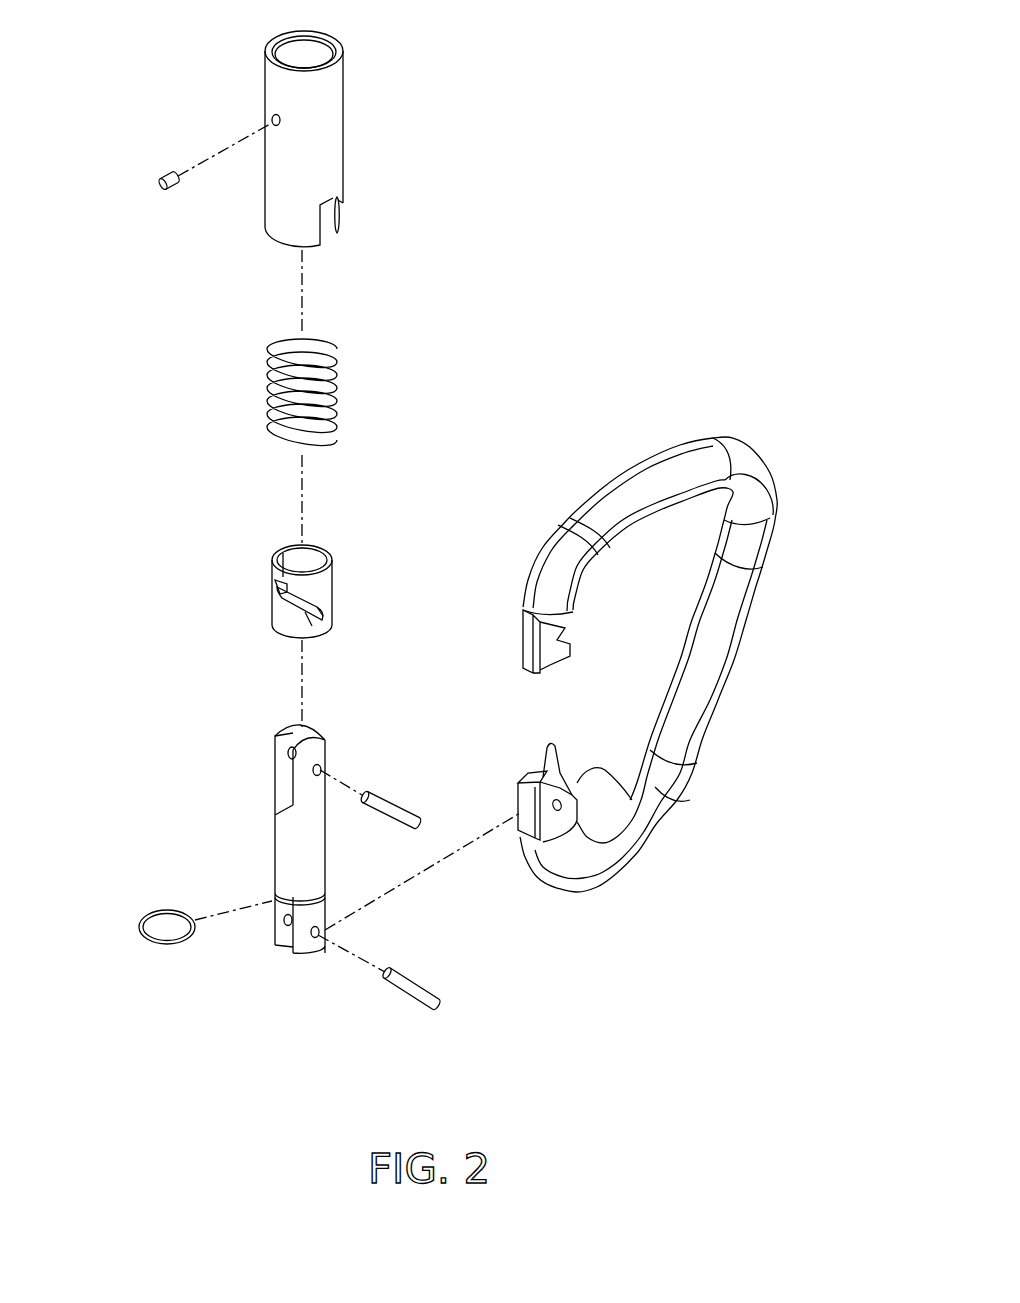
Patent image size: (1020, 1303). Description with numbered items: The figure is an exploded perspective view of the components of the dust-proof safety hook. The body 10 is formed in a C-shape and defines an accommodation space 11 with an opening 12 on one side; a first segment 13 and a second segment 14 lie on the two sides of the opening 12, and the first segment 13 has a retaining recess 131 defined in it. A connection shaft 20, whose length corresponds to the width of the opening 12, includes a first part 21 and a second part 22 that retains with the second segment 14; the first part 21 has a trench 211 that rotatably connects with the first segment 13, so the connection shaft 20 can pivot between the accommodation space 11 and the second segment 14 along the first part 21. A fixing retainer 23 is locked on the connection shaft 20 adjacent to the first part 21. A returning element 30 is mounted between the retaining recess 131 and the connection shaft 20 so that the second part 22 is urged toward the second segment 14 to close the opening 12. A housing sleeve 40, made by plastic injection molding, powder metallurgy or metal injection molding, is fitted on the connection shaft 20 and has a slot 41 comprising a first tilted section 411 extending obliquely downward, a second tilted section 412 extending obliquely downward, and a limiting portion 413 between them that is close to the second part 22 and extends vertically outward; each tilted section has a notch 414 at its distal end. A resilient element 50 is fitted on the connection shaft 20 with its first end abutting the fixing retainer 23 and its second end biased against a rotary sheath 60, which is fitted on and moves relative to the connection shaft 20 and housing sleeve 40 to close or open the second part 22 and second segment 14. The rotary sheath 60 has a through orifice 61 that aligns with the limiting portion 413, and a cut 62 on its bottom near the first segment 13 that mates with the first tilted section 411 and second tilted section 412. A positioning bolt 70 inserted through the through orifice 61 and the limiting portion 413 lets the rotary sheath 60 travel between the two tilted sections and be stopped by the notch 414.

The body 10 is at (618, 590).
The accommodation space 11 is at (642, 607).
The opening 12 is at (540, 722).
The first segment 13 is at (525, 790).
The retaining recess 131 is at (660, 795).
The second segment 14 is at (535, 640).
The connection shaft 20 is at (305, 872).
The first part 21 is at (300, 933).
The trench 211 is at (280, 928).
The second part 22 is at (282, 735).
The fixing retainer 23 is at (162, 917).
The returning element 30 is at (555, 770).
The housing sleeve 40 is at (272, 602).
The slot 41 is at (300, 598).
The first tilted section 411 is at (278, 595).
The second tilted section 412 is at (312, 628).
The limiting portion 413 is at (283, 553).
The notch 414 is at (325, 612).
The resilient element 50 is at (340, 392).
The rotary sheath 60 is at (347, 126).
The through orifice 61 is at (272, 120).
The cut 62 is at (327, 222).
The positioning bolt 70 is at (177, 191).